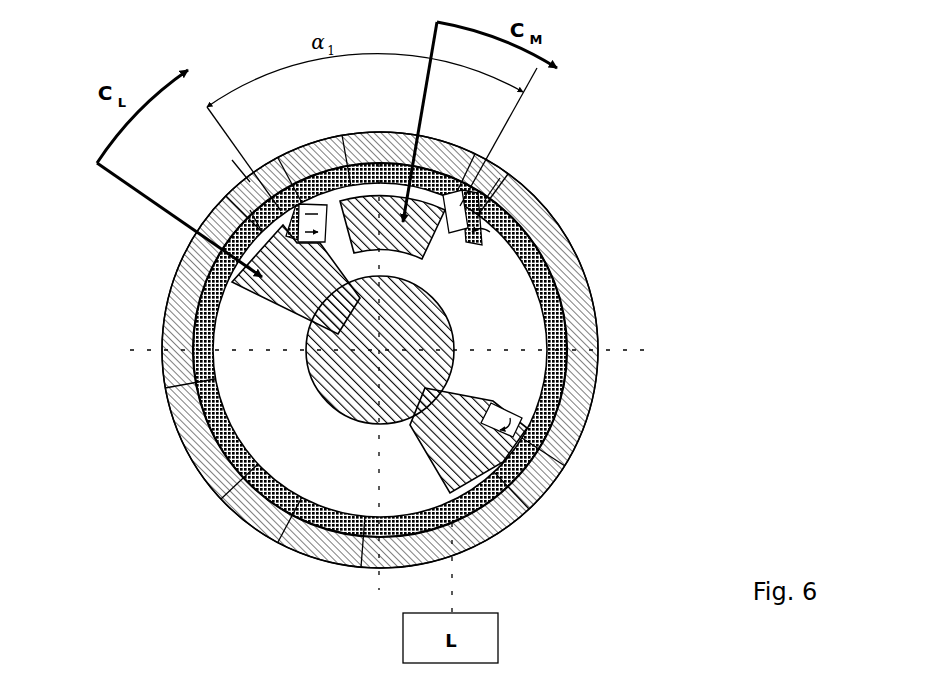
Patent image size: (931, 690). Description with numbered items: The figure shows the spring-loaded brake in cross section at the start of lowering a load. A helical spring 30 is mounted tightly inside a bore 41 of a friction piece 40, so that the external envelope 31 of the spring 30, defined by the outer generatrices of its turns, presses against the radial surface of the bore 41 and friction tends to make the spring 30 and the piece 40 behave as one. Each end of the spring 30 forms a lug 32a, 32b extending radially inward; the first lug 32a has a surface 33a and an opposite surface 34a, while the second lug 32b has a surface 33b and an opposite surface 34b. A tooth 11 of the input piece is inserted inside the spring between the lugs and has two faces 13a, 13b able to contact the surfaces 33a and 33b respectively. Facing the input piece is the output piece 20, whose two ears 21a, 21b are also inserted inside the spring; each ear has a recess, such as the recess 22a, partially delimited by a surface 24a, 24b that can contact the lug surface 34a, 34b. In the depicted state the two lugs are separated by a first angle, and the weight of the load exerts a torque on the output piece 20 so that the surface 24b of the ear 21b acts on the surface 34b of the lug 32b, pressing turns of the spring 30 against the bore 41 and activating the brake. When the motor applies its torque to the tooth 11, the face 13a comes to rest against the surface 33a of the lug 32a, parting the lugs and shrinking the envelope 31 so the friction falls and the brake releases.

The tooth 11 is at (383, 193).
The face 13a is at (446, 244).
The face 13b is at (337, 203).
The output piece 20 is at (348, 397).
The ear 21a is at (517, 513).
The ear 21b is at (260, 291).
The recess 22a is at (528, 400).
The surface 24a is at (546, 452).
The surface 24b is at (310, 204).
The helical spring 30 is at (257, 483).
The external envelope 31 is at (288, 520).
The lug 32a is at (485, 200).
The lug 32b is at (250, 182).
The surface 33a is at (460, 200).
The surface 33b is at (300, 212).
The surface 34a is at (500, 215).
The surface 34b is at (250, 210).
The friction piece 40 is at (188, 420).
The bore 41 is at (203, 385).